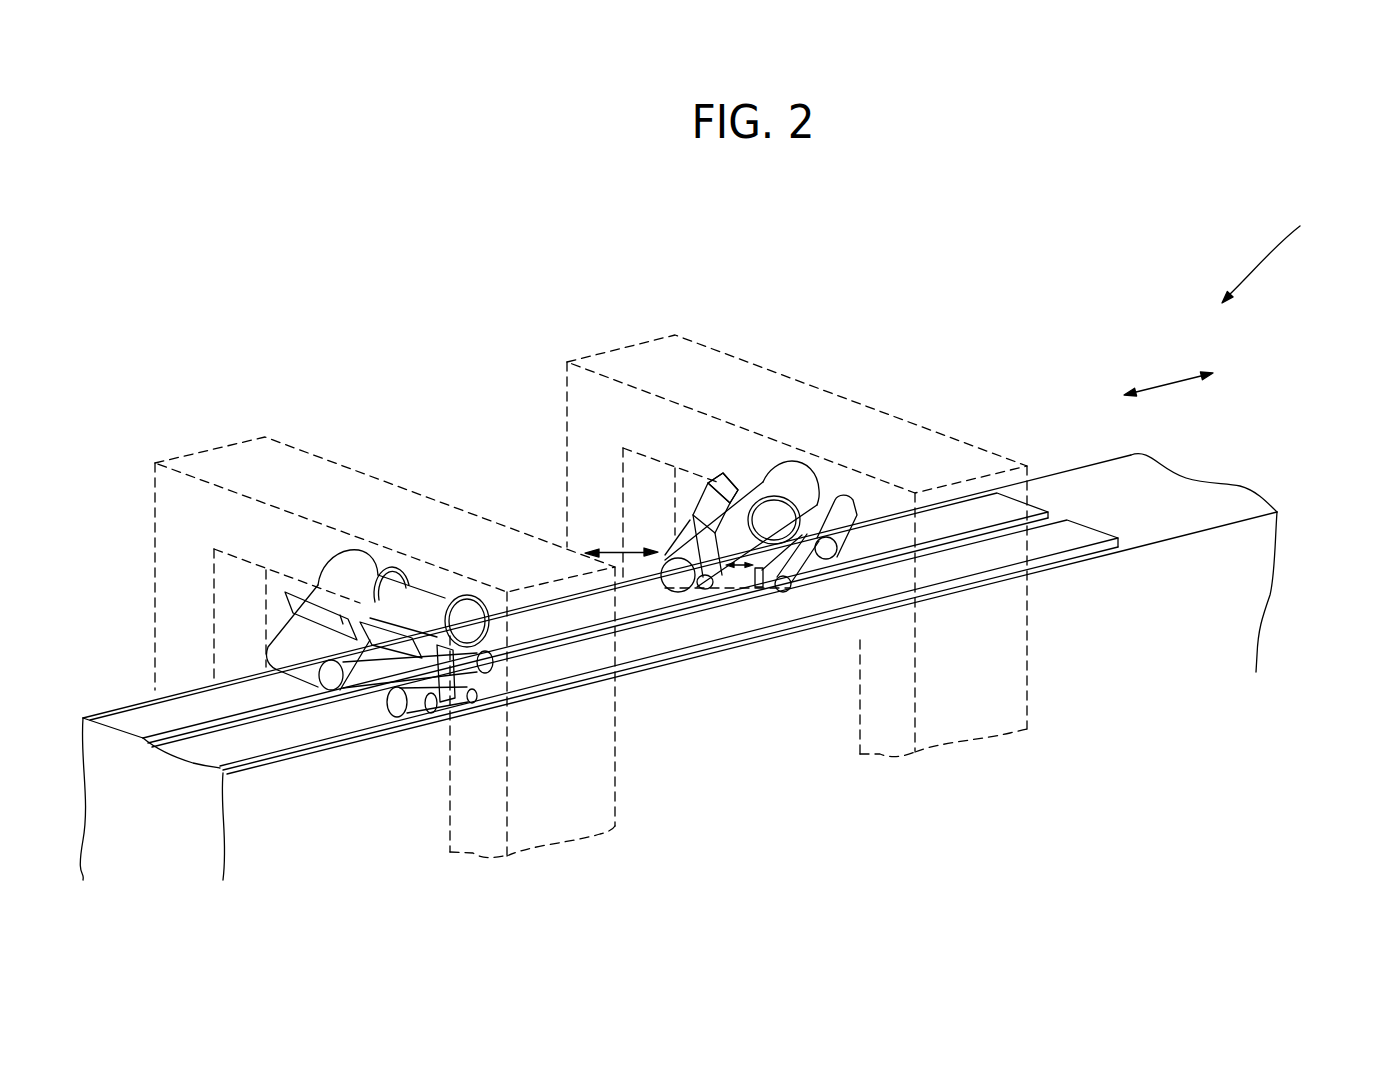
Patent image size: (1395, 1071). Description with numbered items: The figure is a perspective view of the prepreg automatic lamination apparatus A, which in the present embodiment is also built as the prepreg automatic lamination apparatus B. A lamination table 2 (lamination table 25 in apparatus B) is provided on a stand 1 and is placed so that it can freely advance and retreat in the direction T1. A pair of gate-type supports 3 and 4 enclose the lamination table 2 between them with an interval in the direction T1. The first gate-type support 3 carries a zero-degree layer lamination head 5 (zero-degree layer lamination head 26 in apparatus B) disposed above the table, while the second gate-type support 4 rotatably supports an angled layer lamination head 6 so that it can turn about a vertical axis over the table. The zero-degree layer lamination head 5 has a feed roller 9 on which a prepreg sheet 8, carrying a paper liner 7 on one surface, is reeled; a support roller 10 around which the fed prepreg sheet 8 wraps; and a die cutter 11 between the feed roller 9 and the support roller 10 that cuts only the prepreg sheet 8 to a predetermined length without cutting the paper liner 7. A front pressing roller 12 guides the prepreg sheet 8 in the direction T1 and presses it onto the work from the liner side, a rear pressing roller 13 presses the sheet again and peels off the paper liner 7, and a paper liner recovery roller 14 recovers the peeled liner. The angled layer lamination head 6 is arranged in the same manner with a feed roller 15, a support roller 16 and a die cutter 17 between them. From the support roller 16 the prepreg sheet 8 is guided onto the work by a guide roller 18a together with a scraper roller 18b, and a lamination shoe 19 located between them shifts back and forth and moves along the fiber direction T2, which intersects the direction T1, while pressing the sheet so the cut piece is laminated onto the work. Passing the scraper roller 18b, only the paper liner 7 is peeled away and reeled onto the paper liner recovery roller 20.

The stand 1 is at (1262, 506).
The lamination table 2 is at (687, 568).
The lamination table 25 is at (1007, 512).
The gate-type support 3 is at (283, 440).
The gate-type support 4 is at (703, 343).
The 0-degree layer lamination head 5 is at (435, 508).
The 0-degree layer lamination head 26 is at (369, 540).
The angled layer lamination head 6 is at (812, 460).
The paper liner 7 is at (513, 693).
The prepreg sheet 8 is at (370, 686).
The feed roller 9 is at (472, 617).
The support roller 10 is at (397, 704).
The die cutter 11 is at (355, 688).
The front pressing roller 12 is at (432, 706).
The rear pressing roller 13 is at (475, 698).
The paper liner recovery roller 14 is at (492, 662).
The feed roller 15 is at (783, 520).
The support roller 16 is at (677, 582).
The die cutter 17 is at (693, 512).
The guide roller 18a is at (703, 590).
The scraper roller 18b is at (780, 592).
The lamination shoe 19 is at (757, 588).
The paper liner recovery roller 20 is at (838, 562).
The direction T1 is at (1168, 371).
The intersection direction T2 is at (668, 533).
The prepreg automatic lamination apparatus A is at (1304, 249).
The prepreg automatic lamination apparatus B is at (1308, 230).